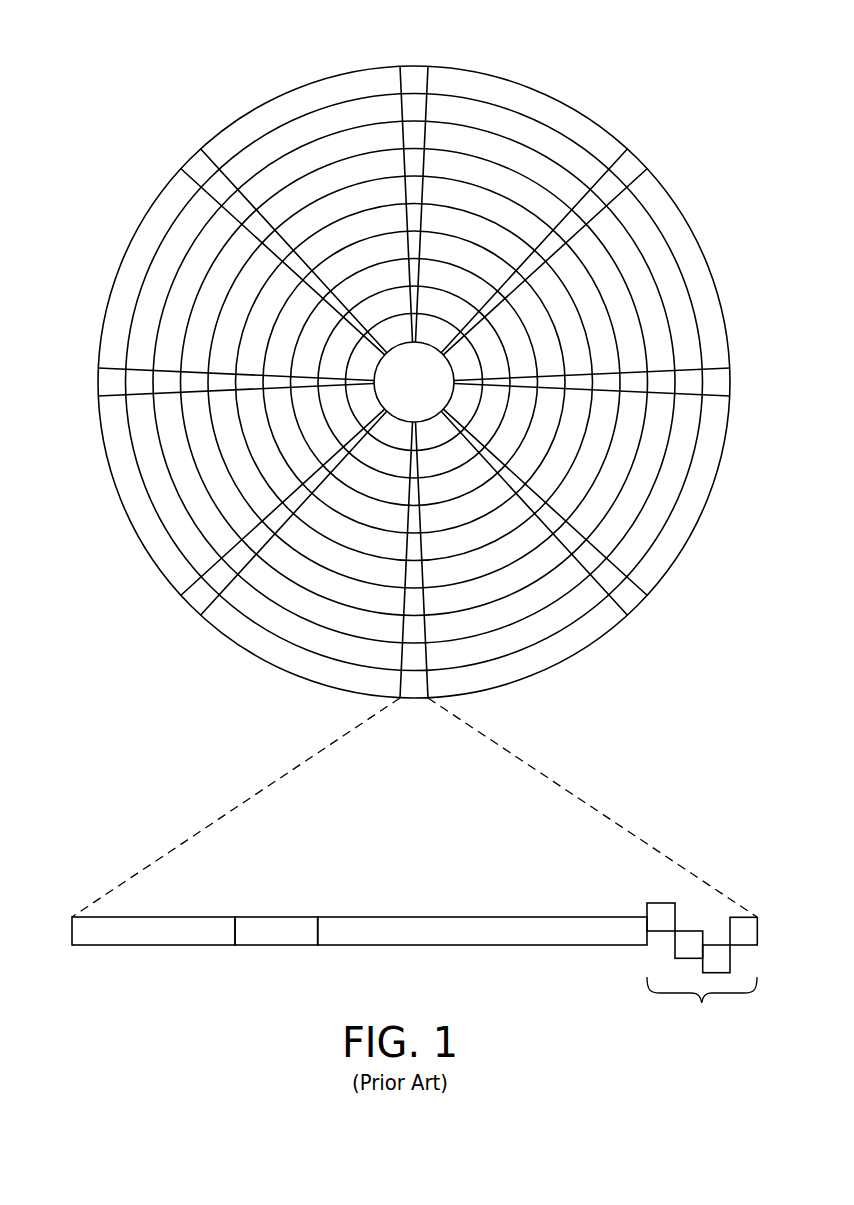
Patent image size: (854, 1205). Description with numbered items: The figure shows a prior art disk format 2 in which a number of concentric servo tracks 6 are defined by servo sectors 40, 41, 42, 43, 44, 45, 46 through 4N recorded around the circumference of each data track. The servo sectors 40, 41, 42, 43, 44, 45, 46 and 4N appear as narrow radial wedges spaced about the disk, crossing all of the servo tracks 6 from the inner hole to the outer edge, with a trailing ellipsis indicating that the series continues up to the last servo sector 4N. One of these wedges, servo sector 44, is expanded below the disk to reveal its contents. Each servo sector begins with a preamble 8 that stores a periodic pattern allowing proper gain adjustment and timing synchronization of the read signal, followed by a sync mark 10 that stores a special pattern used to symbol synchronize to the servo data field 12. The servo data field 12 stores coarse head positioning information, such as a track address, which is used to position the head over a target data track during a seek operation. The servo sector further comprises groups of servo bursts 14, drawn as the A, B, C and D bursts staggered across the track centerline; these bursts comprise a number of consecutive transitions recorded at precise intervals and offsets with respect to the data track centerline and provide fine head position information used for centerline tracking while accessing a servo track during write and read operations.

The disk format 2 is at (176, 66).
The servo tracks 6 is at (520, 130).
The servo sector 40 is at (415, 77).
The servo sector 41 is at (638, 160).
The servo sector 42 is at (722, 383).
The servo sector 43 is at (633, 608).
The servo sector 44 is at (270, 764).
The servo sector 45 is at (193, 605).
The servo sector 46 is at (105, 382).
The servo sector 4N is at (197, 165).
The preamble 8 is at (133, 945).
The sync mark 10 is at (272, 945).
The servo data field 12 is at (469, 945).
The servo bursts 14 is at (628, 880).